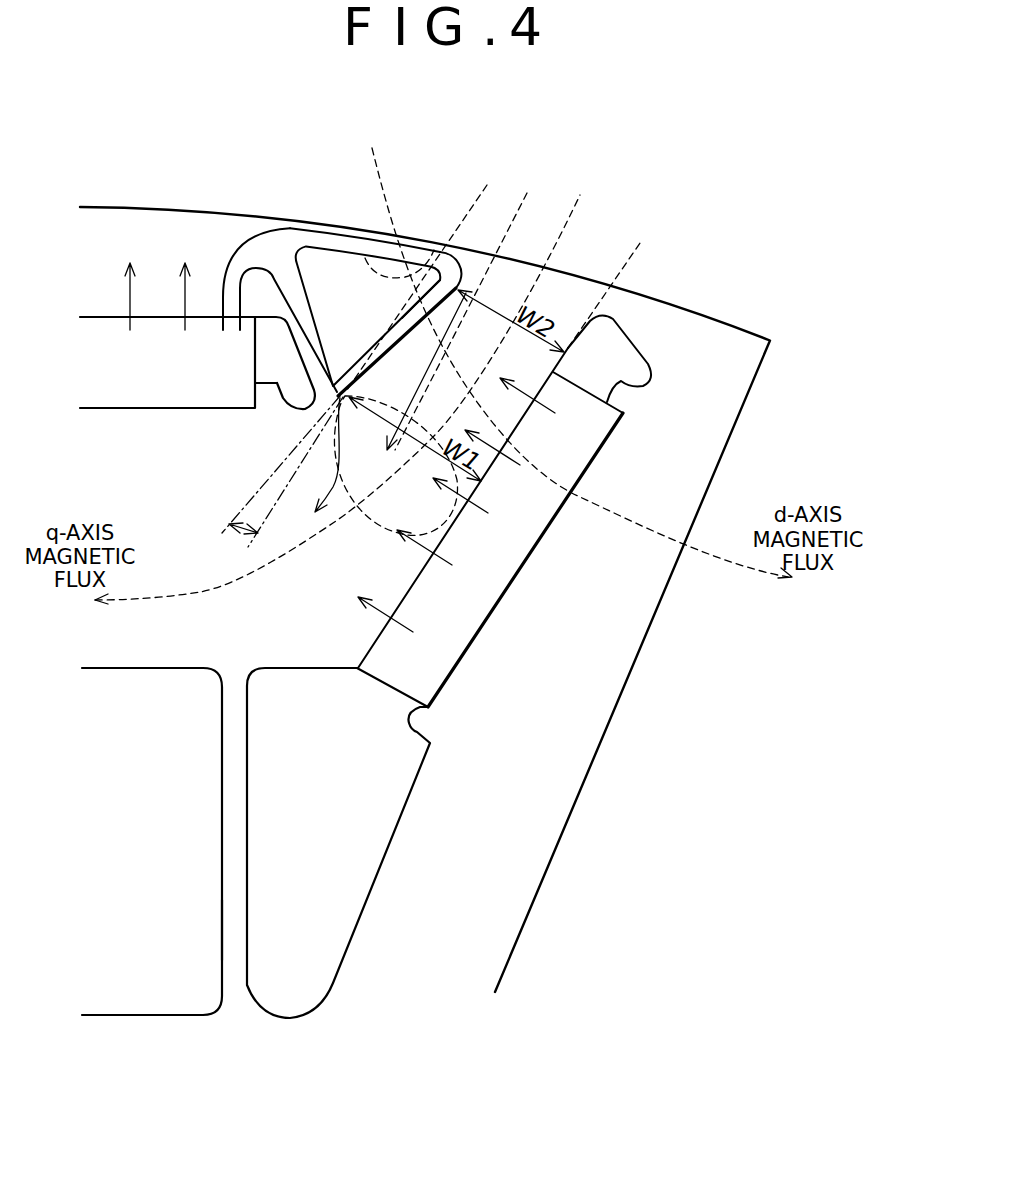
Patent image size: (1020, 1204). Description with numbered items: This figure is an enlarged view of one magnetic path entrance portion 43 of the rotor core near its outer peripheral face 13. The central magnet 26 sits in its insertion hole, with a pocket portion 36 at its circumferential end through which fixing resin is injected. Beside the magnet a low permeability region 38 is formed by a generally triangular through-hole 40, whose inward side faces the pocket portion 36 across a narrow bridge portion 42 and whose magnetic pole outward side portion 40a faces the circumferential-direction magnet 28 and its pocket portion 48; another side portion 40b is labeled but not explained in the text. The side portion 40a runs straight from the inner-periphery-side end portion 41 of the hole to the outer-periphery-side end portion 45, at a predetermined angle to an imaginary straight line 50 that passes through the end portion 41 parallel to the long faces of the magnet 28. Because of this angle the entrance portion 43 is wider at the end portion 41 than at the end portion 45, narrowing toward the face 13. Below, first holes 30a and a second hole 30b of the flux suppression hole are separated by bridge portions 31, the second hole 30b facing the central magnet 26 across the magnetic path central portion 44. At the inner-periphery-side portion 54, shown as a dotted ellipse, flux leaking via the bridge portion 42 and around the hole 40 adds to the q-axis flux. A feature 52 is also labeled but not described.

The outer peripheral face 13 is at (691, 310).
The central magnet 26 is at (171, 378).
The circumferential-direction magnet 28 is at (504, 568).
The first hole 30a is at (338, 843).
The second hole 30b is at (172, 851).
The bridge portion 31 is at (222, 908).
The pocket portion 36 is at (278, 383).
The low permeability region 38 is at (308, 229).
The triangular through-hole 40 is at (354, 300).
The magnetic pole outward side portion 40a is at (402, 316).
The flux barrier alternative contour 40b is at (365, 258).
The inner-periphery-side end portion 41 is at (352, 393).
The bridge portion 42 is at (320, 402).
The magnetic path entrance portion 43 is at (533, 371).
The magnetic path central portion 44 is at (166, 518).
The outer-periphery-side end portion 45 is at (445, 263).
The pocket portion 48 is at (625, 377).
The imaginary straight line 50 is at (466, 207).
The bridge channel 52 is at (257, 270).
The inner-periphery-side portion 54 is at (368, 532).